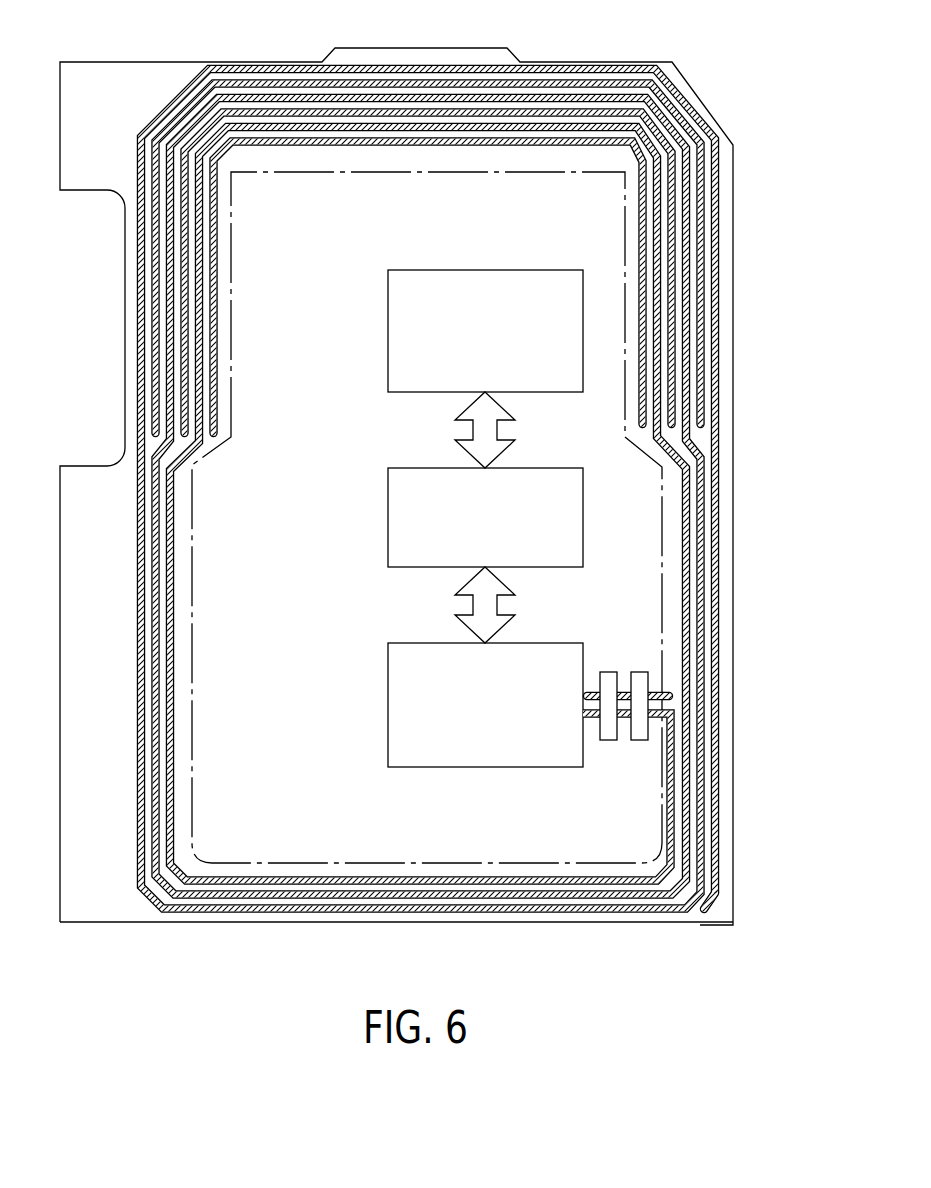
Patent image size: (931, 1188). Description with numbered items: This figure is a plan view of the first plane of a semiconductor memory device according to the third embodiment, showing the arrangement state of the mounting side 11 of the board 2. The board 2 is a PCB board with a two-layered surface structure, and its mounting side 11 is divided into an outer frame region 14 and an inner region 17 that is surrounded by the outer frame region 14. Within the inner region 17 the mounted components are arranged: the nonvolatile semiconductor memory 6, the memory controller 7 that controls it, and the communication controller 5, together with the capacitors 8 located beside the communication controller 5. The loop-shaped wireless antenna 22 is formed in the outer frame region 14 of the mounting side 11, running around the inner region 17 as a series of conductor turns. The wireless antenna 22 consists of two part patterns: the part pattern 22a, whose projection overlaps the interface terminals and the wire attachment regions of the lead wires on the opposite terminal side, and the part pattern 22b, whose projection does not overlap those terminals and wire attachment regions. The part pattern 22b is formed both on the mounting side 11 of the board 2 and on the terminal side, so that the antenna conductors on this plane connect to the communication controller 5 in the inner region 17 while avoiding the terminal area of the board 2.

The board 2 is at (92, 490).
The communication controller 5 is at (558, 643).
The nonvolatile semiconductor memory 6 is at (526, 270).
The memory controller 7 is at (551, 468).
The capacitors 8 is at (608, 672).
The mounting side 11 is at (722, 913).
The outer frame region 14 is at (90, 900).
The inner region 17 is at (298, 200).
The wireless antenna 22 is at (476, 489).
The part pattern 22a is at (718, 180).
The part pattern 22b is at (715, 662).